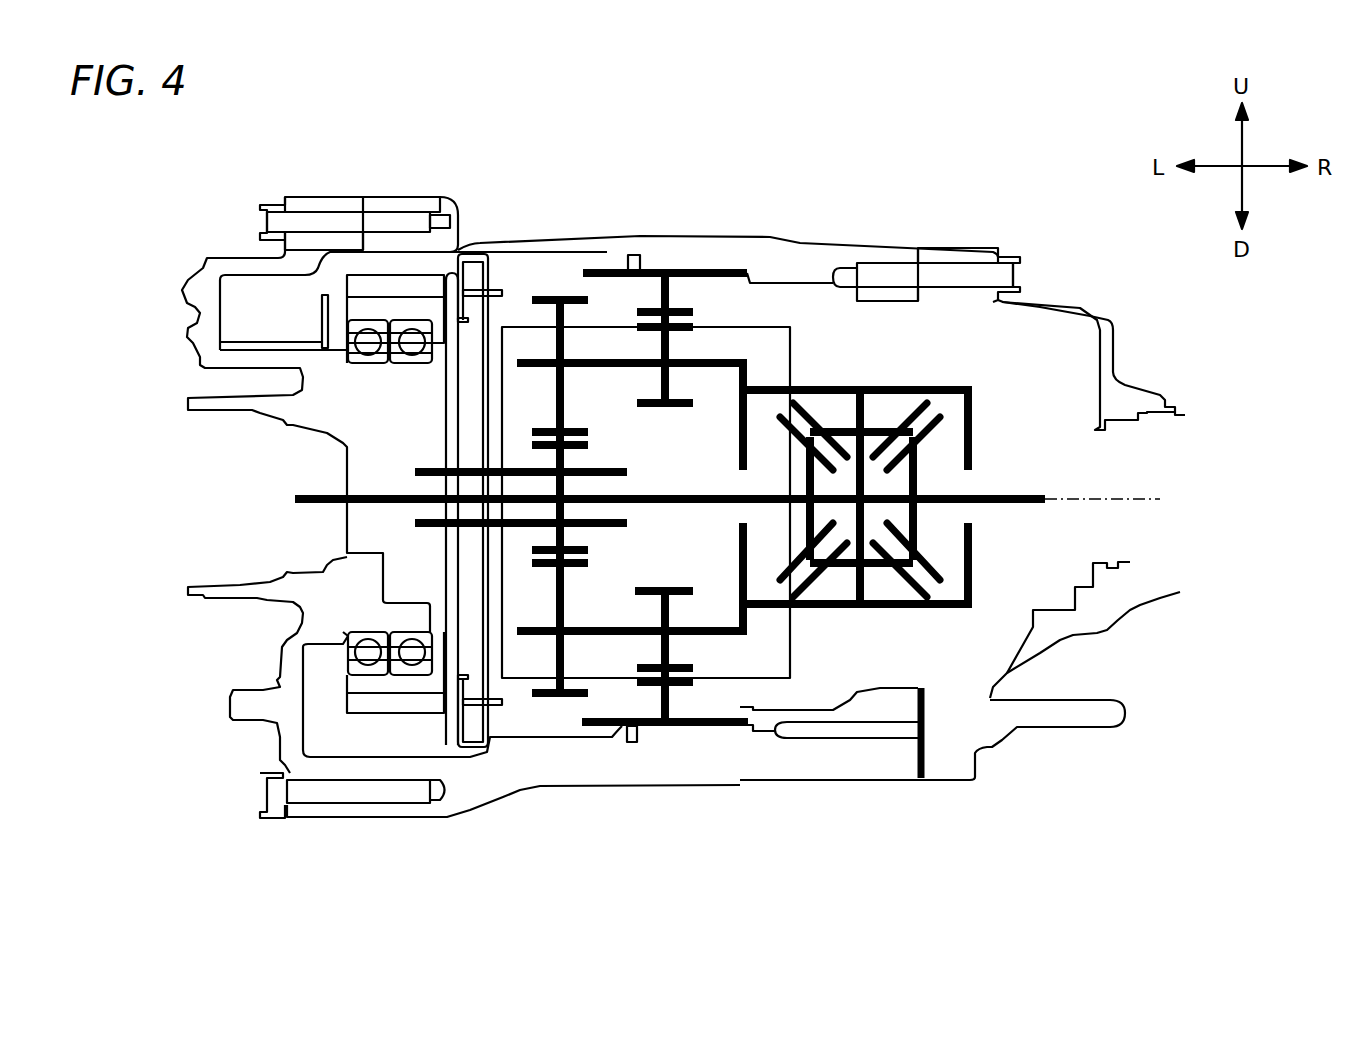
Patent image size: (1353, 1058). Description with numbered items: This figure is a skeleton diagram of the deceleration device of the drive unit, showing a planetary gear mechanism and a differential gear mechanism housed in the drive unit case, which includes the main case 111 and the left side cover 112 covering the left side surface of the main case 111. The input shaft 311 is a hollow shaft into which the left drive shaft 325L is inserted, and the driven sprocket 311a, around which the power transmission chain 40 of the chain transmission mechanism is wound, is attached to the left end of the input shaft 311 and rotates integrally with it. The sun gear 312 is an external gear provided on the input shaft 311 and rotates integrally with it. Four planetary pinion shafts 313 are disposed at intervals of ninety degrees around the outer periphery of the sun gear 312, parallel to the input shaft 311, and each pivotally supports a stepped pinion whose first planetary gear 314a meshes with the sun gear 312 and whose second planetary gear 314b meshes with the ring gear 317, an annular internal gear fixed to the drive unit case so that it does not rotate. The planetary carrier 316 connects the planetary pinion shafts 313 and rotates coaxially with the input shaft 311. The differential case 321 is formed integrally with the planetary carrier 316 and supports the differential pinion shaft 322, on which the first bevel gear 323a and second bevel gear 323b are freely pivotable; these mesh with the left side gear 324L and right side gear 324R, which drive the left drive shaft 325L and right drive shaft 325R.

The power transmission chain 40 is at (385, 596).
The main case 111 is at (646, 236).
The left side cover 112 is at (455, 507).
The input shaft 311 is at (521, 444).
The driven sprocket 311a is at (395, 763).
The sun gear 312 is at (549, 578).
The planetary pinion shaft 313 is at (632, 494).
The first planetary gear 314a is at (571, 227).
The second planetary gear 314b is at (764, 269).
The planetary carrier 316 is at (839, 541).
The ring gear 317 is at (665, 519).
The differential case 321 is at (903, 535).
The differential pinion shaft 322 is at (1036, 476).
The first bevel gear 323a is at (959, 391).
The second bevel gear 323b is at (948, 640).
The right side gear 324R is at (998, 388).
The left side gear 324L is at (858, 680).
The left drive shaft 325L is at (456, 476).
The right drive shaft 325R is at (971, 467).